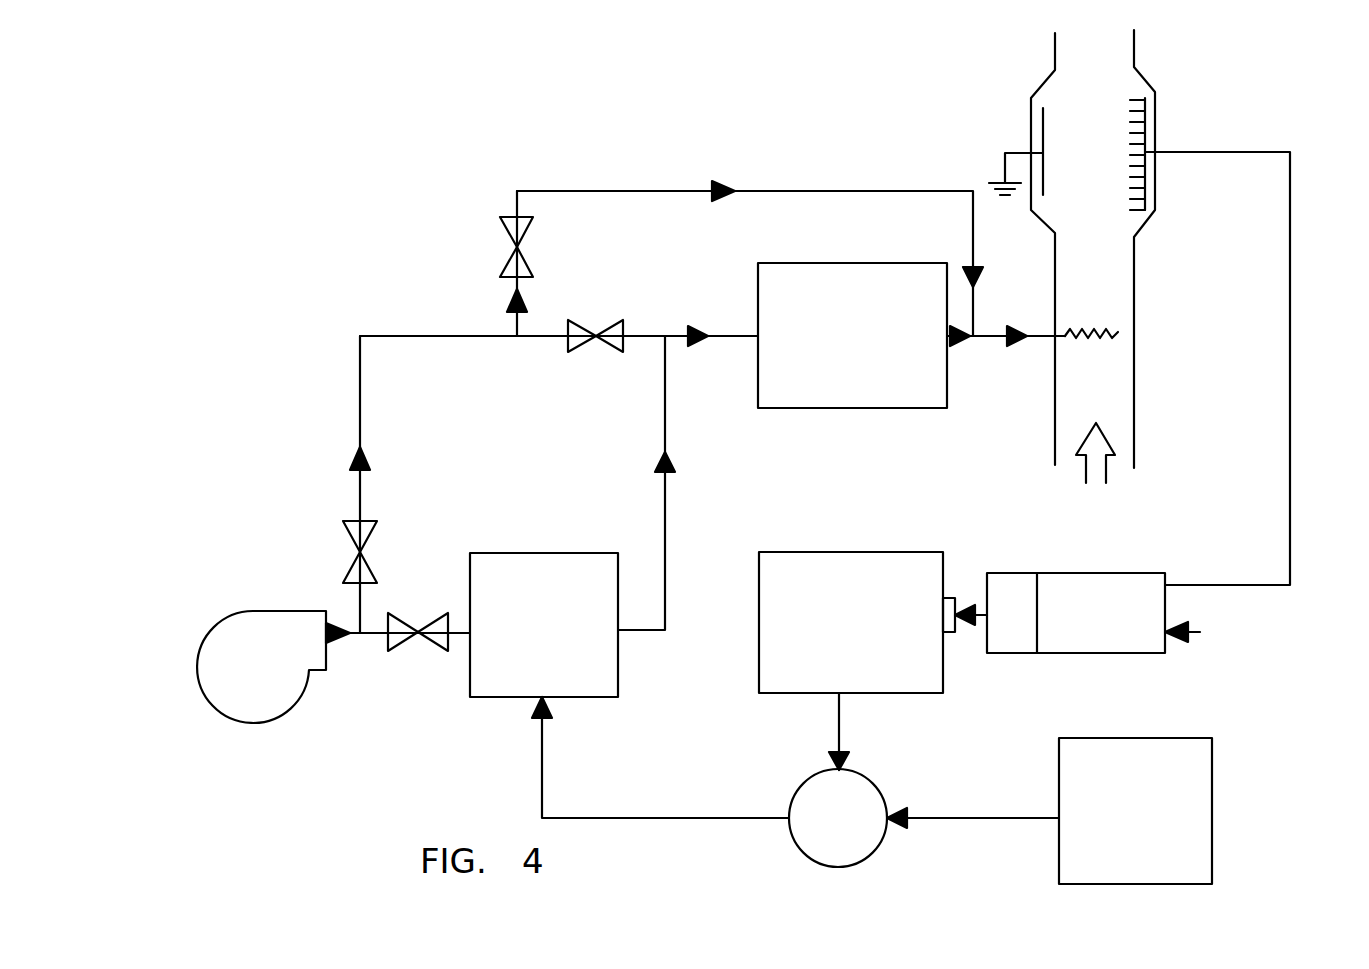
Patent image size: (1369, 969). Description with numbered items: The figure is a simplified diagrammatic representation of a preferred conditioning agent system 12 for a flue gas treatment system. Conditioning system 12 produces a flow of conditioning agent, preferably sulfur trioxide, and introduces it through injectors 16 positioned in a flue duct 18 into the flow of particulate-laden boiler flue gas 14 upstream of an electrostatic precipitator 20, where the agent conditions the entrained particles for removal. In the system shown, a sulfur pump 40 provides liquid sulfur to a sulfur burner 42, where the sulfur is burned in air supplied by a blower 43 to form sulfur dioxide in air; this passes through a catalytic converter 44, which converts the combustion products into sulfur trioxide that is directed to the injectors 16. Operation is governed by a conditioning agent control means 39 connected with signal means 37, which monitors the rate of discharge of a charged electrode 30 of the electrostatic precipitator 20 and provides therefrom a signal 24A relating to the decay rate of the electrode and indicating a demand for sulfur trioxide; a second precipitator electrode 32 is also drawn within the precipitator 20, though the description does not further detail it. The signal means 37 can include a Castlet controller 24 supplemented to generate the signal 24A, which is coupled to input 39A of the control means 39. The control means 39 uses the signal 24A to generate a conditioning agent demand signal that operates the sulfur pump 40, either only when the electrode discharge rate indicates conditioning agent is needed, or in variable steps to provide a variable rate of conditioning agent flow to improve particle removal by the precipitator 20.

The conditioning system 12 is at (542, 143).
The flow of boiler flue gas 14 is at (1106, 483).
The injectors 16 is at (1083, 320).
The flue duct 18 is at (1140, 320).
The electrostatic precipitator 20 is at (1155, 145).
The Castlet controller 24 is at (1125, 573).
The signal 24A is at (975, 620).
The charged electrode 30 is at (1145, 117).
The discharge electrode 32 is at (1033, 138).
The signal means 37 is at (1052, 653).
The conditioning agent control means 39 is at (808, 552).
The input 39A is at (949, 598).
The sulfur pump 40 is at (876, 848).
The sulfur burner 42 is at (470, 647).
The blower 43 is at (268, 611).
The catalytic converter 44 is at (830, 408).